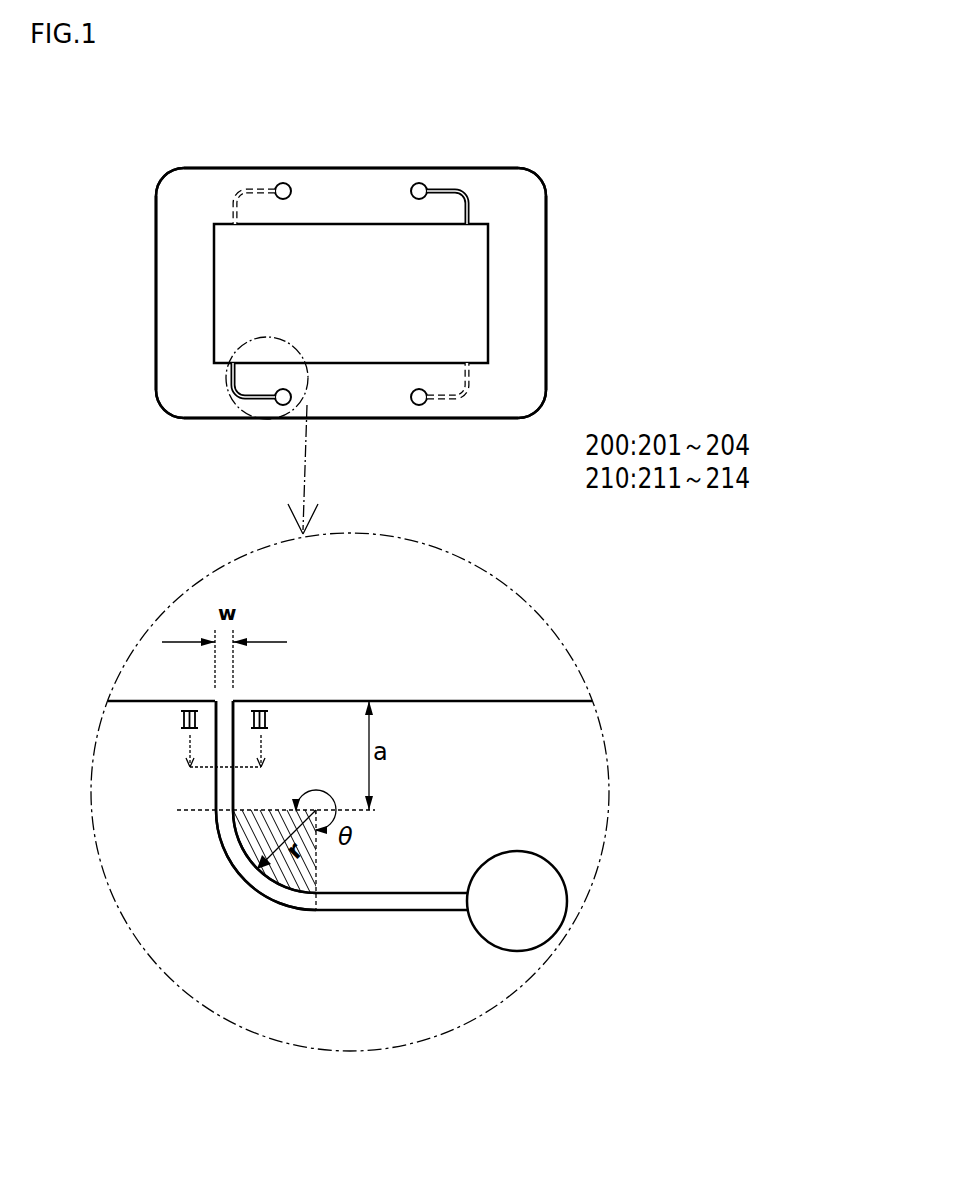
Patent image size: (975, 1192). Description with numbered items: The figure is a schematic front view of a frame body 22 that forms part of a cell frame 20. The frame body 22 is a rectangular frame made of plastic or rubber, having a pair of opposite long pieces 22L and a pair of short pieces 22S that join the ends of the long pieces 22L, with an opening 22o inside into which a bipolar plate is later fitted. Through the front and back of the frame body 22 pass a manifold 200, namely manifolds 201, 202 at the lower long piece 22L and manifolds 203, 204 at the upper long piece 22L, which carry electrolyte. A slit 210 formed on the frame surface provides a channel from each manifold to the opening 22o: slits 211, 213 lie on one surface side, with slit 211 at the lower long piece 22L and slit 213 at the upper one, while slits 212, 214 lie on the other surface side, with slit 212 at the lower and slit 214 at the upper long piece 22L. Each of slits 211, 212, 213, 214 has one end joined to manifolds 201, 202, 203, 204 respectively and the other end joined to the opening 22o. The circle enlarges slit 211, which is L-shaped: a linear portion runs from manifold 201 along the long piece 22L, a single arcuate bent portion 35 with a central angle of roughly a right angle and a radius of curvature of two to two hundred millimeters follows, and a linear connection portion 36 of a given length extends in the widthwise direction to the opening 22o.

The cell frame 20 is at (572, 212).
The frame body 22 is at (155, 233).
The long piece 22L is at (340, 167).
The short piece 22S is at (543, 288).
The opening 22o is at (481, 305).
The manifold 200 is at (522, 873).
The manifold 201 is at (275, 403).
The manifold 202 is at (420, 404).
The manifold 203 is at (427, 183).
The manifold 204 is at (289, 183).
The slit 210 is at (392, 915).
The slit 211 is at (230, 385).
The slit 212 is at (468, 375).
The slit 213 is at (470, 197).
The slit 214 is at (232, 202).
The bent portion 35 is at (318, 913).
The connection portion 36 is at (177, 701).